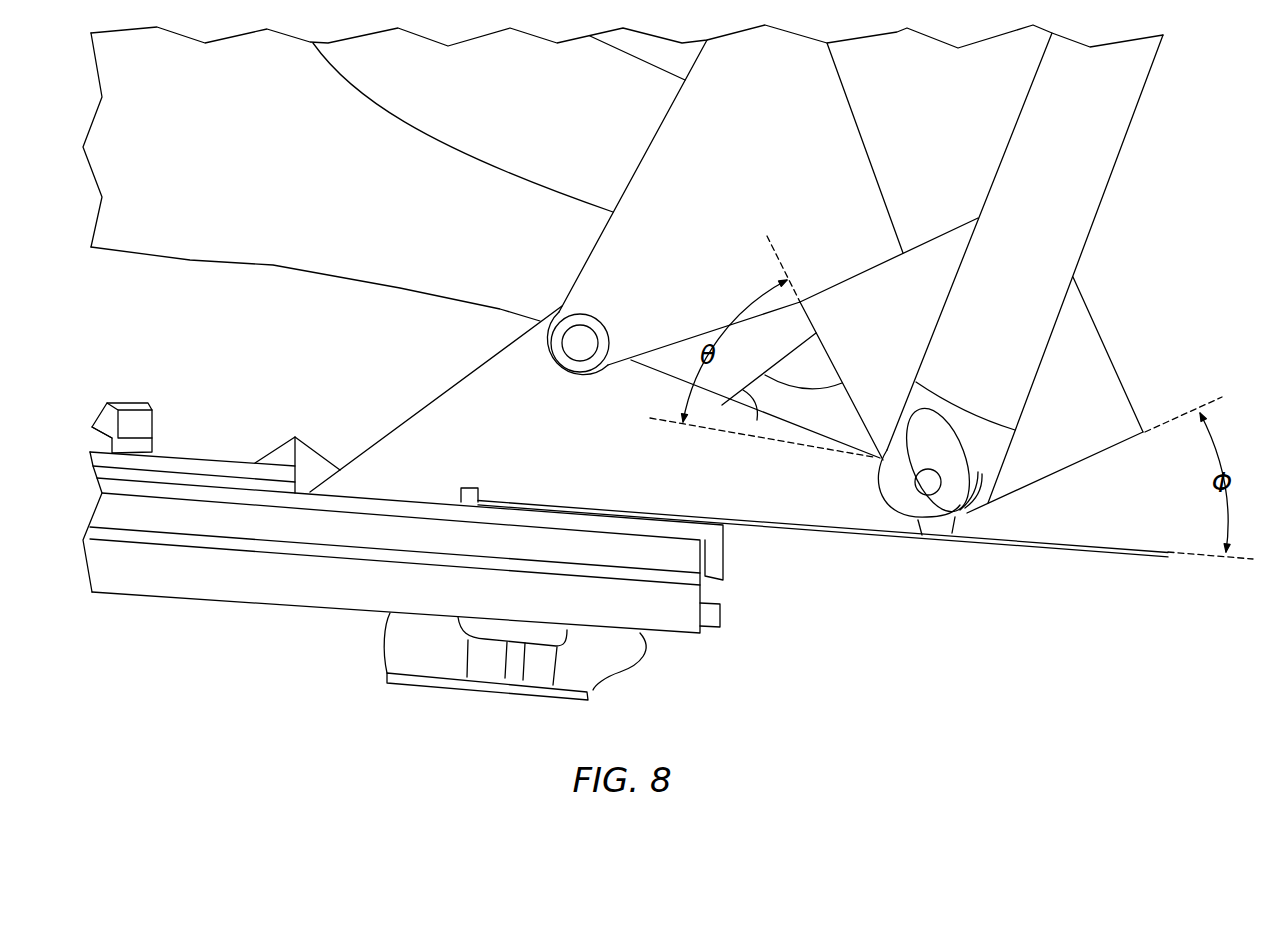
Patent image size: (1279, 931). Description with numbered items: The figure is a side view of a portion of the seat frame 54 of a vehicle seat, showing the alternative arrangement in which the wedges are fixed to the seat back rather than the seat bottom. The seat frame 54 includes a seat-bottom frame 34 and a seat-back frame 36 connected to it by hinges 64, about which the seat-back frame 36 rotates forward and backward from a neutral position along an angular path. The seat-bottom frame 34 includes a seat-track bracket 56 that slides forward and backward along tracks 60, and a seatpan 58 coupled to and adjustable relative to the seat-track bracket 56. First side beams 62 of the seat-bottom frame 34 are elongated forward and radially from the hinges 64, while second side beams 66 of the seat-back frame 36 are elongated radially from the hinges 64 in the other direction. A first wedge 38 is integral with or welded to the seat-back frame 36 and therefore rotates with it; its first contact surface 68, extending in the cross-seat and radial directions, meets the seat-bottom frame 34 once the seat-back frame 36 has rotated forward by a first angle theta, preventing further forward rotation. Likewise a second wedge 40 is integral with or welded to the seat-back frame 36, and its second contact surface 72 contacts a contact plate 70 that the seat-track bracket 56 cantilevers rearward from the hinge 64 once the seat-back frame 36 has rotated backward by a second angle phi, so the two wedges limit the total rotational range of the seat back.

The seat-bottom frame 34 is at (185, 262).
The seat-back frame 36 is at (1123, 142).
The first wedge 38 is at (868, 268).
The second wedge 40 is at (1108, 352).
The seat frame 54 is at (883, 602).
The seat-track bracket 56 is at (255, 247).
The seatpan 58 is at (418, 411).
The tracks 60 is at (265, 603).
The first side beams 62 is at (668, 347).
The hinges 64 is at (922, 537).
The second side beams 66 is at (1000, 165).
The first contact surface 68 is at (850, 402).
The contact plate 70 is at (1100, 555).
The second contact surface 72 is at (1043, 479).